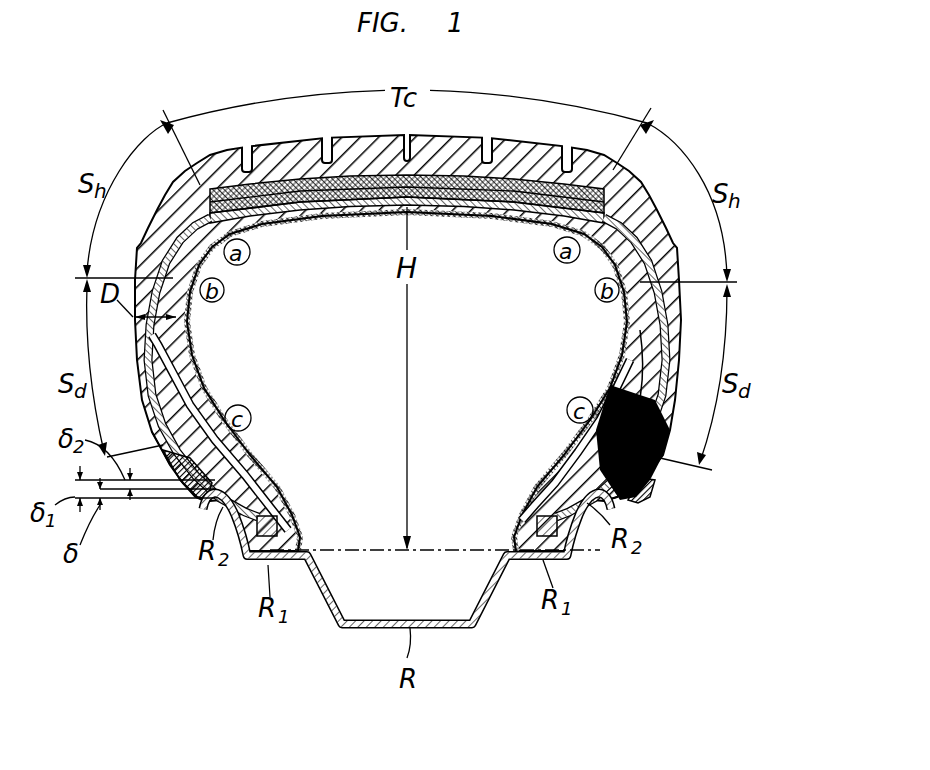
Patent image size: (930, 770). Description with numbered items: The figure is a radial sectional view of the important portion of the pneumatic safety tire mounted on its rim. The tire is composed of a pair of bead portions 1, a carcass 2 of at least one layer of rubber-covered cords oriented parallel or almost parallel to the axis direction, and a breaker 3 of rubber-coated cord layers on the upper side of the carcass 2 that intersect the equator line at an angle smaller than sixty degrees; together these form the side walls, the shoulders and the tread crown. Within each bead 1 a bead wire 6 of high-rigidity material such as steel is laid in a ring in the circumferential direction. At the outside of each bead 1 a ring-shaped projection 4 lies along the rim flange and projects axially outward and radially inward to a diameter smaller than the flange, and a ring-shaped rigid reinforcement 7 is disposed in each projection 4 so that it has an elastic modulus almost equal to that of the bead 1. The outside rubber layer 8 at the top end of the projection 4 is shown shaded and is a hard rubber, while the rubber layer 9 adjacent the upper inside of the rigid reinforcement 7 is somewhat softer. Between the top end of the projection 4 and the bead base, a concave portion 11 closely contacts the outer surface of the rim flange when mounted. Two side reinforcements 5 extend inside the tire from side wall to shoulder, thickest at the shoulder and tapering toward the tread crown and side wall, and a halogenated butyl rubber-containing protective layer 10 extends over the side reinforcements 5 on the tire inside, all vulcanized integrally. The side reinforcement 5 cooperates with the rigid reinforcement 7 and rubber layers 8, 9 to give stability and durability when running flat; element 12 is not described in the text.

The bead portion 1 is at (287, 530).
The carcass 2 is at (137, 345).
The breaker 3 is at (443, 213).
The ring-shaped projection 4 is at (185, 497).
The side reinforcement 5 is at (177, 352).
The bead wire 6 is at (252, 555).
The rigid reinforcement 7 is at (243, 448).
The outside rubber layer 8 is at (177, 493).
The rubber layer 9 is at (623, 407).
The protective layer 10 is at (197, 380).
The concave portion 11 is at (563, 470).
The rubber chafer 12 is at (160, 450).